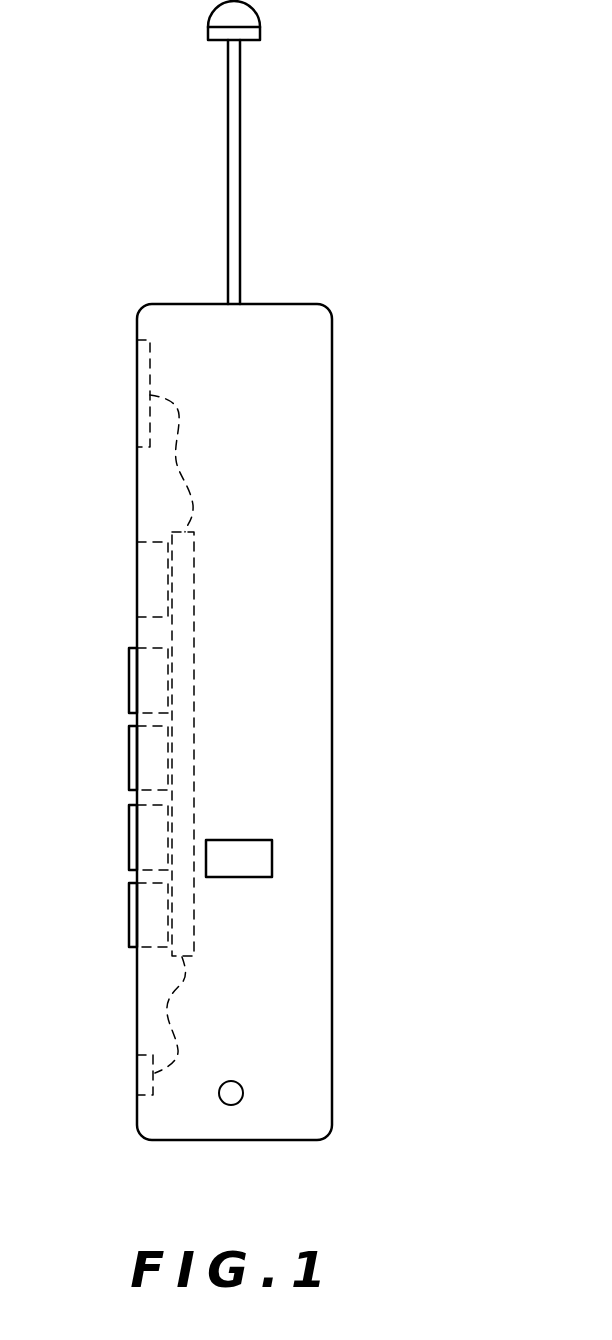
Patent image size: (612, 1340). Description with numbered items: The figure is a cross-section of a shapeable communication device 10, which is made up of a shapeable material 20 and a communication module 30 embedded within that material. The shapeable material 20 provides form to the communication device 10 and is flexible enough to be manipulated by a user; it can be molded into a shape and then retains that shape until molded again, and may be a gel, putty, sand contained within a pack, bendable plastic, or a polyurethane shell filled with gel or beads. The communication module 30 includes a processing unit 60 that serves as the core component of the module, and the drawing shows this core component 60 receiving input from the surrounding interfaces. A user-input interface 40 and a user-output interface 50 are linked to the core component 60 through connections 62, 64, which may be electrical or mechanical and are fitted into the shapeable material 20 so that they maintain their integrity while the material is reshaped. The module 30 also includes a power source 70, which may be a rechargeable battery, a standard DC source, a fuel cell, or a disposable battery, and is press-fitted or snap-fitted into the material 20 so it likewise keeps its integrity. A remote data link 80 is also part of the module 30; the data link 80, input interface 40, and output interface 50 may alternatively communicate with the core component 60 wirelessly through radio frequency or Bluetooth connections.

The communication device 10 is at (463, 178).
The shapeable material 20 is at (333, 385).
The communication module 30 is at (212, 642).
The user-input interface 40 is at (138, 1072).
The user-output interface 50 is at (148, 395).
The core component 60 is at (194, 730).
The connection 62 is at (167, 1010).
The connection 64 is at (175, 458).
The power source 70 is at (230, 1084).
The remote data link 80 is at (237, 850).